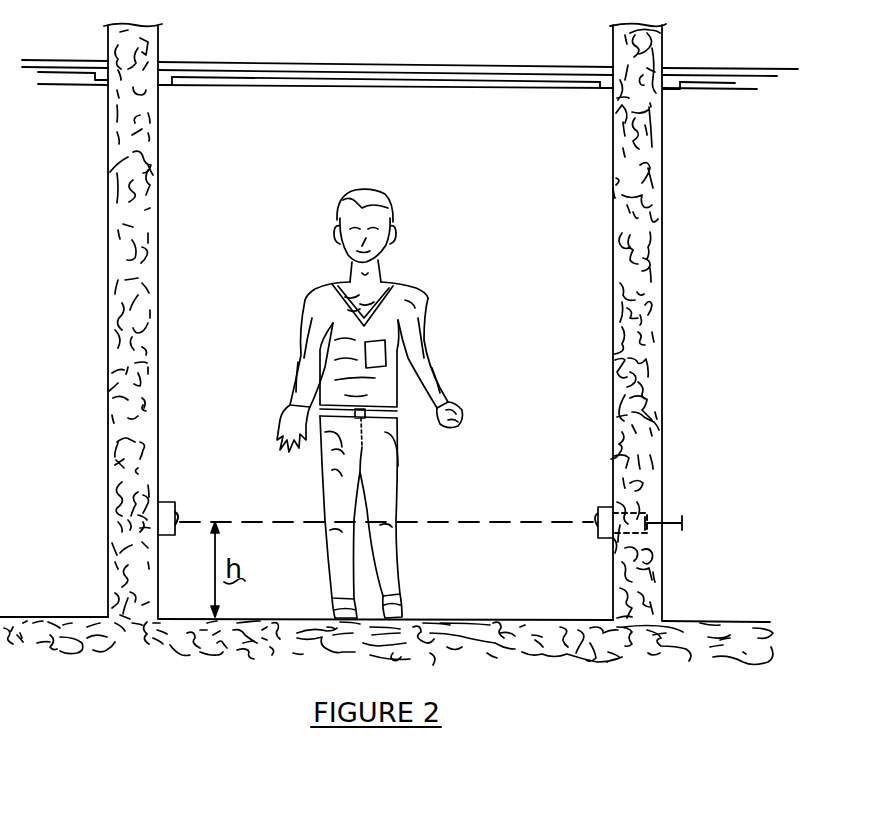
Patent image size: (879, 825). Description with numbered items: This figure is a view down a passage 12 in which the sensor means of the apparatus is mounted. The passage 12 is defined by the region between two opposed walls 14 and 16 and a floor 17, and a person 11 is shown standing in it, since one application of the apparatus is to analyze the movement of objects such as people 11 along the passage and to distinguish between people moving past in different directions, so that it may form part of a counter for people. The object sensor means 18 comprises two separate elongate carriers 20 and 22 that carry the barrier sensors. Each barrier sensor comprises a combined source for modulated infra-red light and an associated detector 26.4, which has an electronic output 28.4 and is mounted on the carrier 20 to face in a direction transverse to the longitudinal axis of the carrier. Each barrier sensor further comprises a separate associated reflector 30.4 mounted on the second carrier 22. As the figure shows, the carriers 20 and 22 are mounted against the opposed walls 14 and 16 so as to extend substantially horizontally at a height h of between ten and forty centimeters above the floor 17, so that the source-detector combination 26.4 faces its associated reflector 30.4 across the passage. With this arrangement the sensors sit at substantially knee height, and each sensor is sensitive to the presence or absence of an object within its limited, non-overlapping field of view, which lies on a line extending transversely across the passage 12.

The people 11 is at (408, 302).
The passage 12 is at (557, 320).
The wall 14 is at (108, 385).
The wall 16 is at (662, 389).
The floor 17 is at (443, 620).
The object sensor means 18 is at (204, 514).
The carrier 20 is at (607, 506).
The second carrier 22 is at (164, 510).
The source-detector combination 26.4 is at (633, 523).
The electronic output 28.4 is at (649, 523).
The reflector 30.4 is at (179, 515).